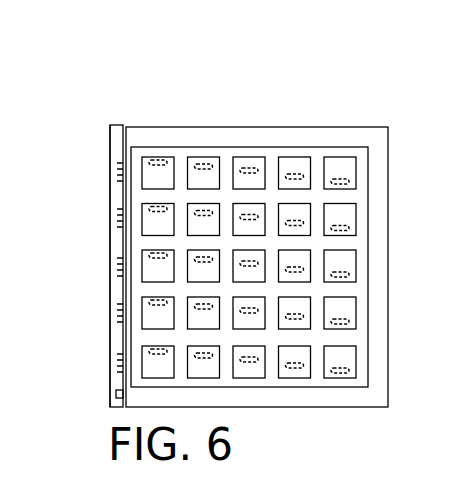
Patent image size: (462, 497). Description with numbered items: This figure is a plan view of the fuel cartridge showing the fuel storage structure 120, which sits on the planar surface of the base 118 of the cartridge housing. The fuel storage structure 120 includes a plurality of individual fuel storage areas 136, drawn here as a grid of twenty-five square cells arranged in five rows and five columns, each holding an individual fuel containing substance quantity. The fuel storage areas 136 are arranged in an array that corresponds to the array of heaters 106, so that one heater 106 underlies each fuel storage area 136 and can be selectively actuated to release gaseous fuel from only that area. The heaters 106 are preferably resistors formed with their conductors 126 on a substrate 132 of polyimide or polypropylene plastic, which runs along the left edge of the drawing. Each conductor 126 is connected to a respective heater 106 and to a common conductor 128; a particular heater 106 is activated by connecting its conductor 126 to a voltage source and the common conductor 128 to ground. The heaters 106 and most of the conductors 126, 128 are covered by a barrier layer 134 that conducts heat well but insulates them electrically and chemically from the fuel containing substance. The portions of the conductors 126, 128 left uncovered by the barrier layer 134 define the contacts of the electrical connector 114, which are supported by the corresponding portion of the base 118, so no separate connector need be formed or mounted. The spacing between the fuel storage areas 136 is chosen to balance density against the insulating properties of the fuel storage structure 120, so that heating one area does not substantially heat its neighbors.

The base 118 is at (387, 105).
The barrier layer 134 is at (322, 400).
The fuel storage structure 120 is at (368, 267).
The fuel storage areas 136 is at (295, 157).
The heaters 106 is at (205, 163).
The electrical connector 114 is at (119, 121).
The substrate 132 is at (111, 312).
The conductors 126 is at (123, 255).
The common conductor 128 is at (115, 393).